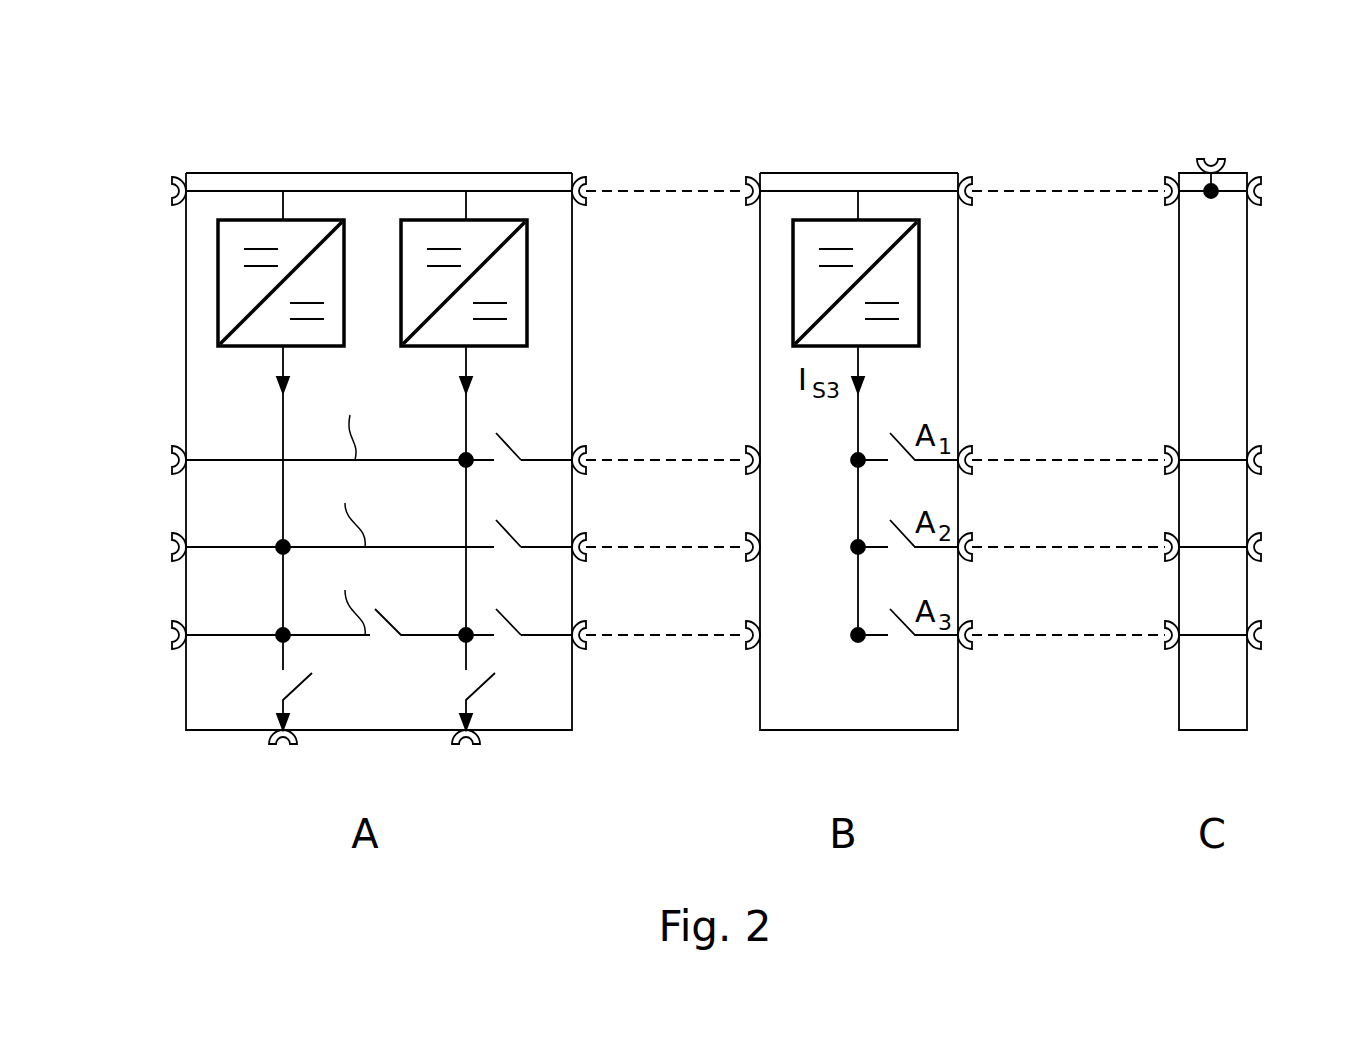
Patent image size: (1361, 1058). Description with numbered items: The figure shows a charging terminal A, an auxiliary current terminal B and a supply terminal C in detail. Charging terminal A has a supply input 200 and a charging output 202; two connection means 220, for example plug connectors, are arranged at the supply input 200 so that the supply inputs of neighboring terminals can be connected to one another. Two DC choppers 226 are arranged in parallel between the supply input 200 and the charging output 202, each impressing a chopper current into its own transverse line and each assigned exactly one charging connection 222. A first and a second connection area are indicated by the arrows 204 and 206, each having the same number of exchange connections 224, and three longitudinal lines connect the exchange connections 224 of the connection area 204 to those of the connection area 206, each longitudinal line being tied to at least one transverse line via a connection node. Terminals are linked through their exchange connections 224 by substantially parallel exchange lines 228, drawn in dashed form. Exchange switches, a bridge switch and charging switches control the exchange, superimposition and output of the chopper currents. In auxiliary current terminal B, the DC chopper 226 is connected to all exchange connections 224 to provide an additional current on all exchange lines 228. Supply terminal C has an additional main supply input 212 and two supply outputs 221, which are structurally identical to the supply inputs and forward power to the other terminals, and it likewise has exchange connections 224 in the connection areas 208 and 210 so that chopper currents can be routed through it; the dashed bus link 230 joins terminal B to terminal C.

The supply input 200 is at (398, 156).
The charging output 202 is at (158, 717).
The first connection area 204 is at (150, 425).
The second connection area 206 is at (602, 380).
The connection area 208 is at (1158, 414).
The connection area 210 is at (1265, 388).
The main supply input 212 is at (1212, 155).
The connection means 220 is at (172, 181).
The supply outputs 221 is at (1168, 176).
The charging connection 222 is at (288, 745).
The exchange connection 224 is at (172, 456).
The DC chopper 226 is at (216, 286).
The exchange lines 228 is at (1037, 458).
The bus cable 230 is at (1093, 192).